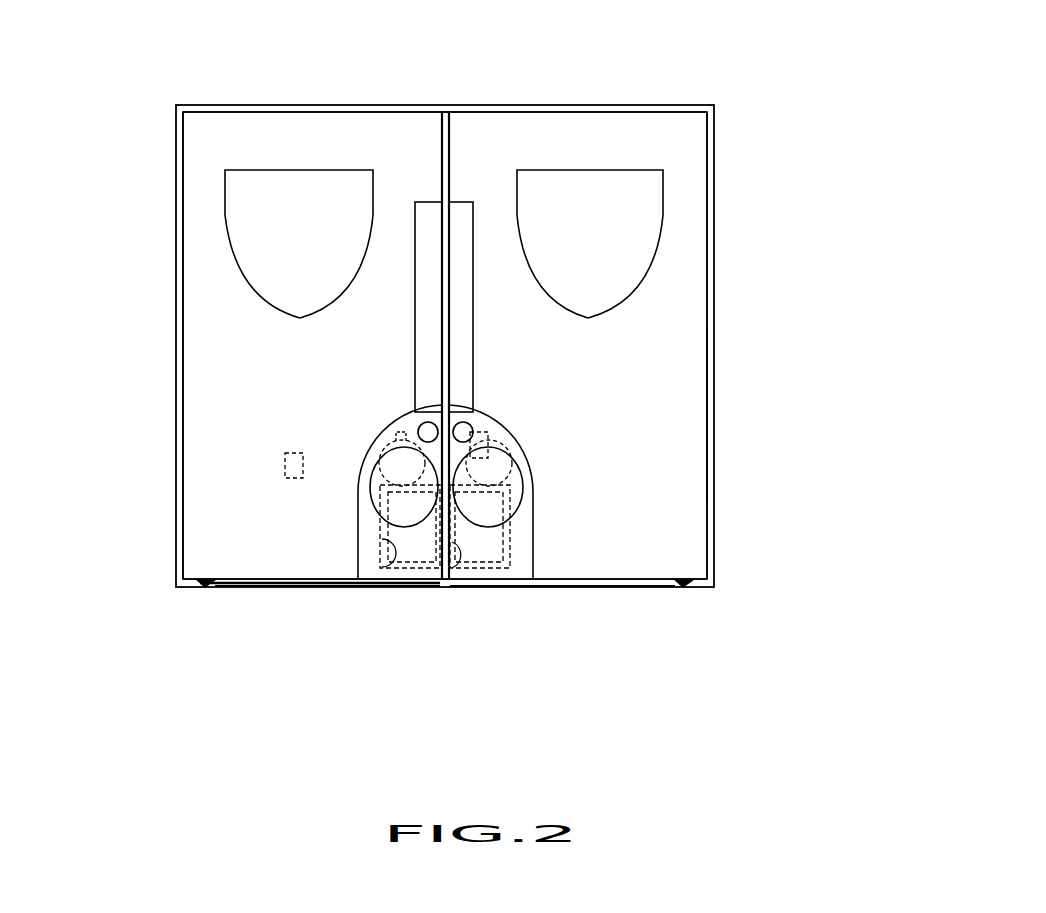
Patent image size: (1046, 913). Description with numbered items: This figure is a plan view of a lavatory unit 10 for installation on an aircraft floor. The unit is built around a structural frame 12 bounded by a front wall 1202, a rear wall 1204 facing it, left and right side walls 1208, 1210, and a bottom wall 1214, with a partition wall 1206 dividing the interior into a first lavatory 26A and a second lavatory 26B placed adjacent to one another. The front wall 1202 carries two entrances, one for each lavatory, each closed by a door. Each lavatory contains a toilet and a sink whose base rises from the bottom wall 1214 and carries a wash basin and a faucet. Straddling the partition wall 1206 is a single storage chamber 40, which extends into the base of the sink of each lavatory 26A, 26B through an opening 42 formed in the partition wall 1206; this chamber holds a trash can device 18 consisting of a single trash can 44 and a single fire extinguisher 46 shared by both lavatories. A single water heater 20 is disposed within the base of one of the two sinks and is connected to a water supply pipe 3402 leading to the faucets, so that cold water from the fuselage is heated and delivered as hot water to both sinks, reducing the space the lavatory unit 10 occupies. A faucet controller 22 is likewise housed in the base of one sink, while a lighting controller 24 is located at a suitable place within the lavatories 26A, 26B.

The lavatory unit 10 is at (755, 118).
The structural frame 12 is at (715, 197).
The trash can device 18 is at (485, 566).
The water heater 20 is at (327, 426).
The faucet controller 22 is at (374, 452).
The lighting controller 24 is at (287, 468).
The first lavatory 26A is at (242, 163).
The second lavatory 26B is at (650, 162).
The storage chamber 40 is at (390, 573).
The opening 42 is at (482, 500).
The trash can 44 is at (407, 580).
The fire extinguisher 46 is at (473, 578).
The front wall 1202 is at (513, 585).
The rear wall 1204 is at (487, 107).
The partition wall 1206 is at (440, 174).
The left side wall 1208 is at (176, 355).
The right side wall 1210 is at (713, 298).
The bottom wall 1214 is at (665, 406).
The water supply pipe 3402 is at (488, 436).